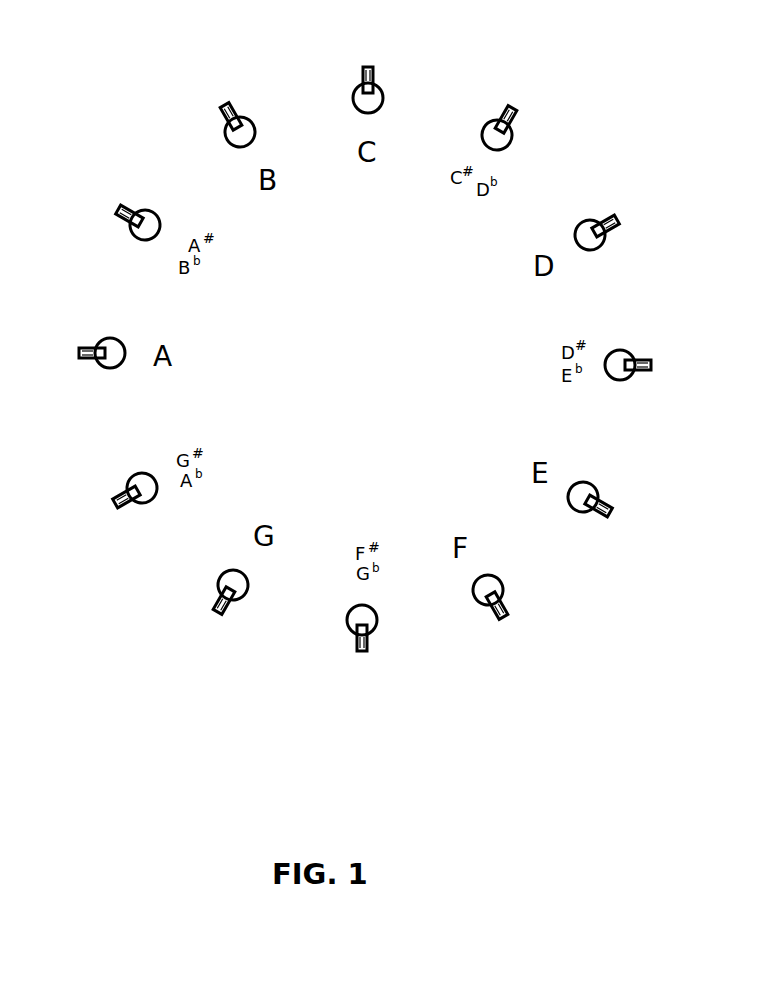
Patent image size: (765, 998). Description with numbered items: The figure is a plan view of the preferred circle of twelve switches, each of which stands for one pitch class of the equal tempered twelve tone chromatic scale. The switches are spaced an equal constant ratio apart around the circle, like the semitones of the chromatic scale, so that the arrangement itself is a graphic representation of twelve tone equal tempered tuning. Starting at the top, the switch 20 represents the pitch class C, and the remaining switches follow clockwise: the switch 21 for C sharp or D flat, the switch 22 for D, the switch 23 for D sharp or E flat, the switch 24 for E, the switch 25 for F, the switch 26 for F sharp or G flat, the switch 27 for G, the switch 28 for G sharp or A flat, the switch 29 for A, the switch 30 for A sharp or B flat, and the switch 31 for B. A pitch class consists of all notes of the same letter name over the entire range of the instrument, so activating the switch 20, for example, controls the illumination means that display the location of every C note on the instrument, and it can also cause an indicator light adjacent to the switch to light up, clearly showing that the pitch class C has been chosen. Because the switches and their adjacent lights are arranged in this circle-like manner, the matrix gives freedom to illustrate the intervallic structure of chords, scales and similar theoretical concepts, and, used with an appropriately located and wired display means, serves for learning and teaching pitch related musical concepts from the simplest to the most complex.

The switch 20 is at (368, 67).
The switch 21 is at (512, 109).
The switch 22 is at (617, 220).
The switch 23 is at (651, 365).
The switch 24 is at (610, 512).
The switch 25 is at (503, 617).
The switch 26 is at (362, 651).
The switch 27 is at (218, 612).
The switch 28 is at (115, 504).
The switch 29 is at (79, 353).
The switch 30 is at (118, 210).
The switch 31 is at (225, 106).